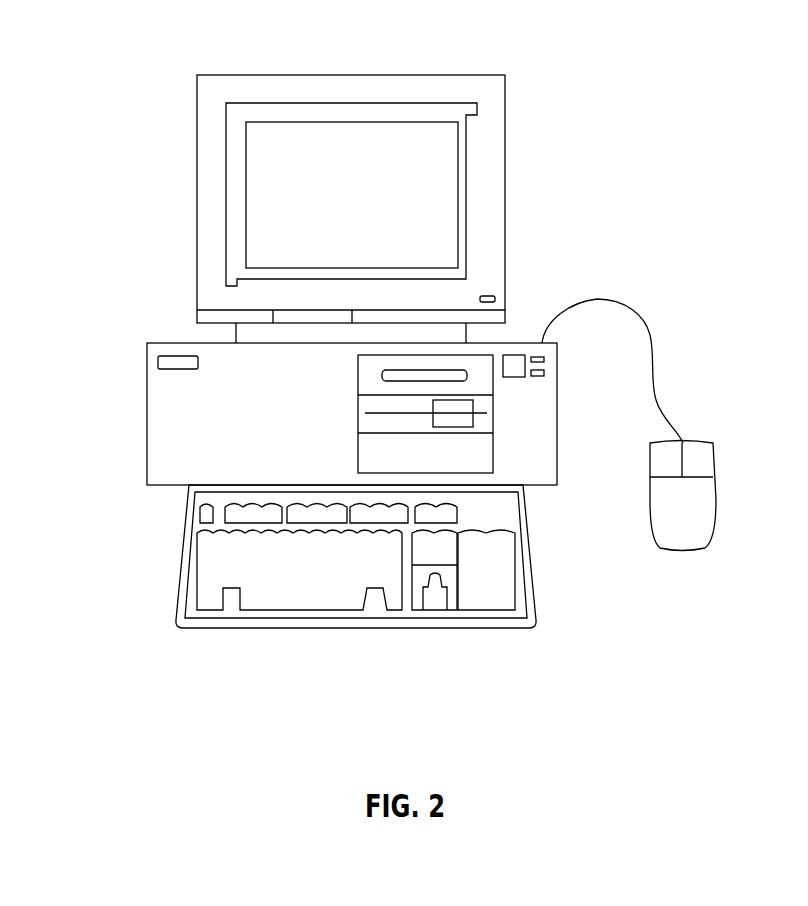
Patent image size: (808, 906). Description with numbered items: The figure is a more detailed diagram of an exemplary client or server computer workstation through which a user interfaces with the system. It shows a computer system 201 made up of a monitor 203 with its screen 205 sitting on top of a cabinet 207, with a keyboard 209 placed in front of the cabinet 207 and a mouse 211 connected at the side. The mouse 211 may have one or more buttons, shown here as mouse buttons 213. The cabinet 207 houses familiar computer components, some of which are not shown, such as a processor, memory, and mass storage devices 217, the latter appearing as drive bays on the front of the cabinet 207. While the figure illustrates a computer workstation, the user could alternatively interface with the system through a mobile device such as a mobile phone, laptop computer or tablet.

The computer system 201 is at (528, 52).
The monitor 203 is at (505, 168).
The screen 205 is at (265, 183).
The cabinet 207 is at (177, 348).
The keyboard 209 is at (225, 633).
The mouse 211 is at (682, 533).
The mouse buttons 213 is at (697, 463).
The mass storage devices 217 is at (483, 360).